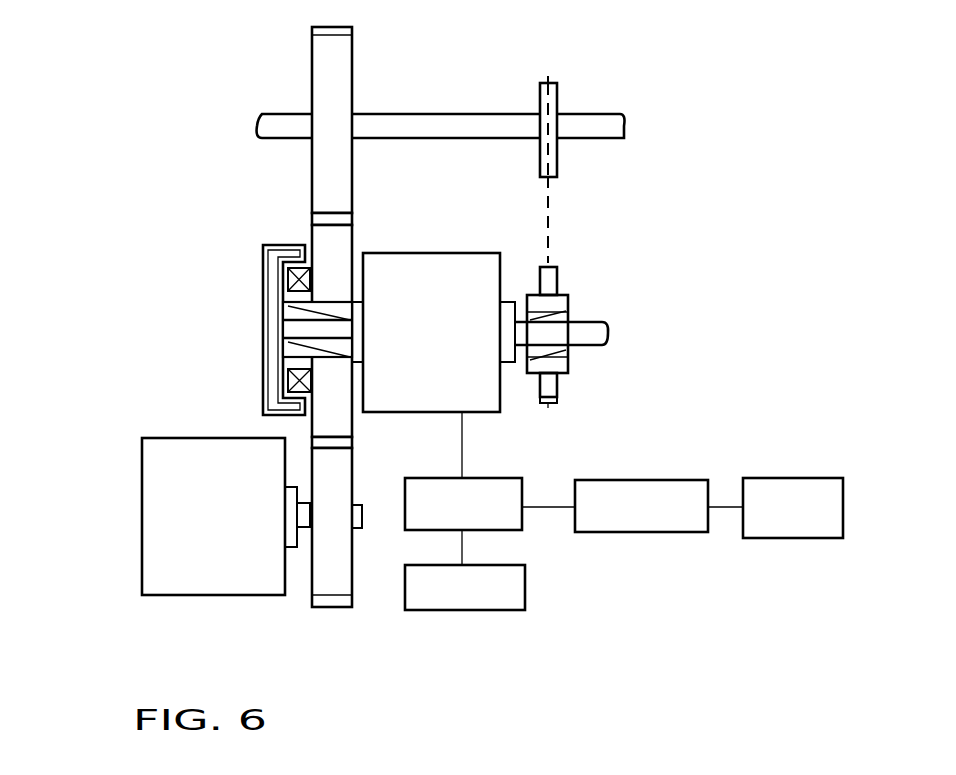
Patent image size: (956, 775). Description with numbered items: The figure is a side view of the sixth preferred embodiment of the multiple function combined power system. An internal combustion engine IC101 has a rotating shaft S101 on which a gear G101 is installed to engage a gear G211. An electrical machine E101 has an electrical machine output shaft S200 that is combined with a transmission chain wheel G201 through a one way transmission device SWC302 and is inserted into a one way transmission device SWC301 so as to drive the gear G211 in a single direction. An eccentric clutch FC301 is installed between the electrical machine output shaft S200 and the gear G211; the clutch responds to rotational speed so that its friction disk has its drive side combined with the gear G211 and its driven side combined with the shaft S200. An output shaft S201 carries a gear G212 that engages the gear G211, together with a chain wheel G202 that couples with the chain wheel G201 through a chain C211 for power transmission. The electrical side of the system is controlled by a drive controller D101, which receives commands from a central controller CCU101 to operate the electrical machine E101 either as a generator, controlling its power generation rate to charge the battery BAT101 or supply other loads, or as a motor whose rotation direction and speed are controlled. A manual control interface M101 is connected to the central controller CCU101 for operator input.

The gear G212 is at (337, 80).
The gear G211 is at (340, 242).
The gear G101 is at (338, 475).
The output shaft S201 is at (603, 130).
The chain wheel G202 is at (560, 97).
The chain C211 is at (552, 206).
The electrical machine E101 is at (438, 272).
The one way transmission device SWC301 is at (288, 312).
The eccentric clutch FC301 is at (262, 378).
The transmission chain wheel G201 is at (557, 283).
The one way transmission device SWC302 is at (568, 318).
The electrical machine output shaft S200 is at (588, 334).
The internal combustion engine IC101 is at (160, 522).
The rotating shaft S101 is at (365, 528).
The drive controller D101 is at (463, 504).
The central controller CCU101 is at (641, 506).
The manual control interface M101 is at (793, 508).
The battery BAT101 is at (465, 587).